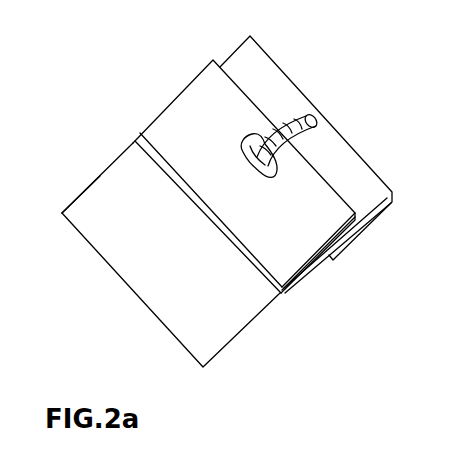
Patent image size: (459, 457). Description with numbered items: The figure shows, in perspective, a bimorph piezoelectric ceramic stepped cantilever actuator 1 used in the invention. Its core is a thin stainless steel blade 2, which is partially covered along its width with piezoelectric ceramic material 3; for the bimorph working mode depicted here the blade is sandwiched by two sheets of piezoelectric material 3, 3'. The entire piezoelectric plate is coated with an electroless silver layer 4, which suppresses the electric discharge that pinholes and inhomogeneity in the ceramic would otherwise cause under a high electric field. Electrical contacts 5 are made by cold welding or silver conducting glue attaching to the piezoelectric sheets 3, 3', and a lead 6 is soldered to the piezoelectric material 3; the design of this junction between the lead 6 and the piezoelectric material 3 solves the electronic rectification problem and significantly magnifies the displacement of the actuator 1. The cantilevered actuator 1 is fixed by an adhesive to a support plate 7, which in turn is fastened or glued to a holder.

The stepped cantilever piezoelectric actuator 1 is at (133, 298).
The thin stainless steel blade 2 is at (93, 208).
The piezoelectric ceramic material 3 is at (213, 215).
The piezoelectric material sheet 3' is at (337, 263).
The electroless silver layer 4 is at (187, 117).
The contacts 5 is at (265, 175).
The lead 6 is at (243, 152).
The support plate 7 is at (382, 208).